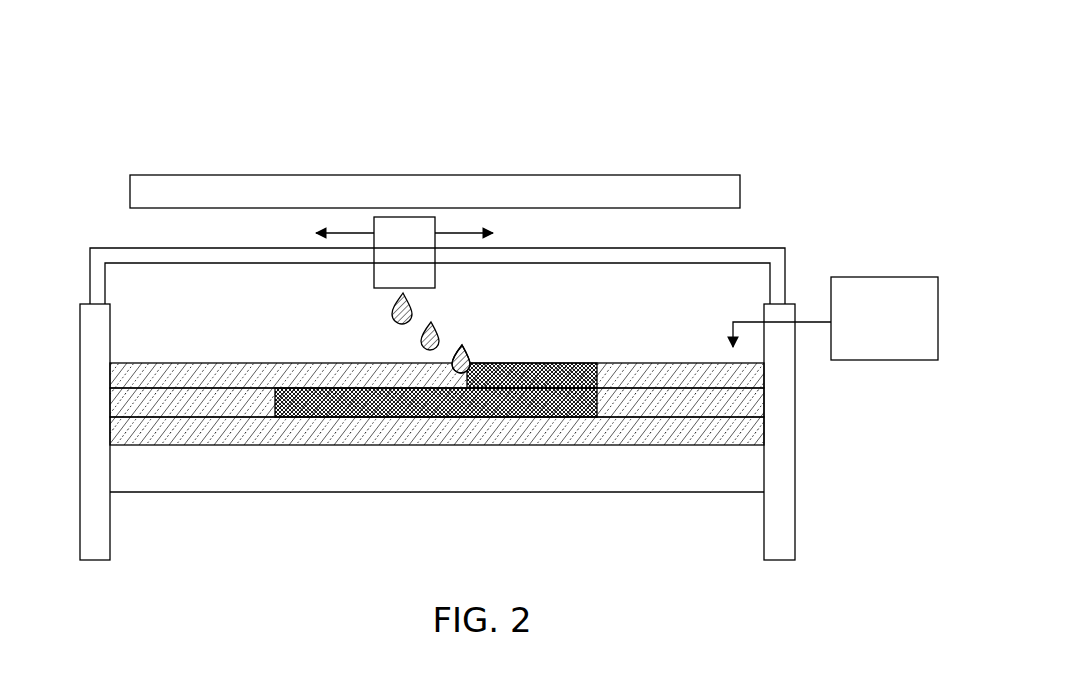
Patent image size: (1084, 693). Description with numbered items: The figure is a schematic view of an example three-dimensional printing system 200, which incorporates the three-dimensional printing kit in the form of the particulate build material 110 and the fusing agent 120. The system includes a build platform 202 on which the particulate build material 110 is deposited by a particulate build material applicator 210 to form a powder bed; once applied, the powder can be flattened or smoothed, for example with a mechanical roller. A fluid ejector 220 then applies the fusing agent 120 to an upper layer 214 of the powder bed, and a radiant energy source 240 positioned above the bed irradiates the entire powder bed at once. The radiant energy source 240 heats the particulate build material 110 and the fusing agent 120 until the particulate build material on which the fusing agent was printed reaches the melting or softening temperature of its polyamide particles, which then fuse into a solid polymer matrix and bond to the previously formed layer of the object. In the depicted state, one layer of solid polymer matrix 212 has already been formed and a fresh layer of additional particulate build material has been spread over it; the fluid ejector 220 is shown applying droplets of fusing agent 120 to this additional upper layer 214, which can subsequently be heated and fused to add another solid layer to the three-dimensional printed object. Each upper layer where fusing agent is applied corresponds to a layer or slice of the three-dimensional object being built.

The three-dimensional printing system 200 is at (172, 92).
The radiant energy source 240 is at (435, 191).
The fluid ejector 220 is at (404, 252).
The fusing agent 120 is at (390, 309).
The particulate build material applicator 210 is at (835, 318).
The particulate build material 110 is at (282, 428).
The solid polymer matrix 212 is at (402, 414).
The upper layer 214 is at (508, 416).
The build platform 202 is at (602, 457).